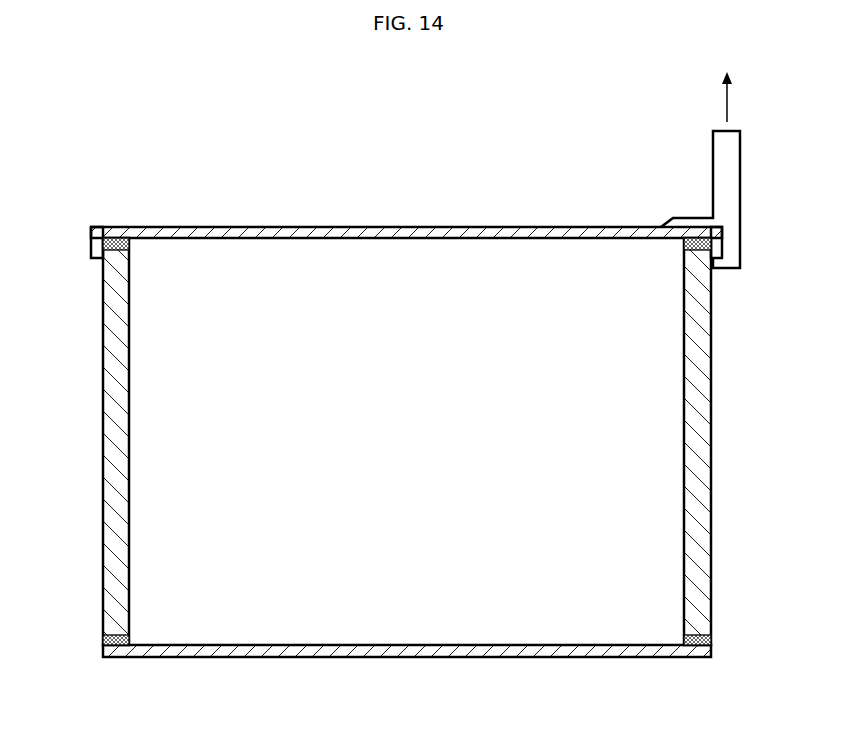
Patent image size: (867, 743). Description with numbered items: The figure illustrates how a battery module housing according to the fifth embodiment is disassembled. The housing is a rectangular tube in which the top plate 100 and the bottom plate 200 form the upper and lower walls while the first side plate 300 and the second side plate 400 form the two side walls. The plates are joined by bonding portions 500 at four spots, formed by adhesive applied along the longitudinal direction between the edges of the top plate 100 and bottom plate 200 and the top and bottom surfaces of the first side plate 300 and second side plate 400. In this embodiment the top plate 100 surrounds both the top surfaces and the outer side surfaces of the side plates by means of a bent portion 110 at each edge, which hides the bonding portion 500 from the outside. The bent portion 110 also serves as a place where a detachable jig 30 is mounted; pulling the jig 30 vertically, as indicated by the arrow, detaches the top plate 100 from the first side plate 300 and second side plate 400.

The top plate 100 is at (514, 227).
The bent portion 110 is at (91, 247).
The bottom plate 200 is at (514, 657).
The first side plate 300 is at (711, 440).
The second side plate 400 is at (103, 440).
The bonding portion 500 is at (116, 244).
The detachable jig 30 is at (740, 178).